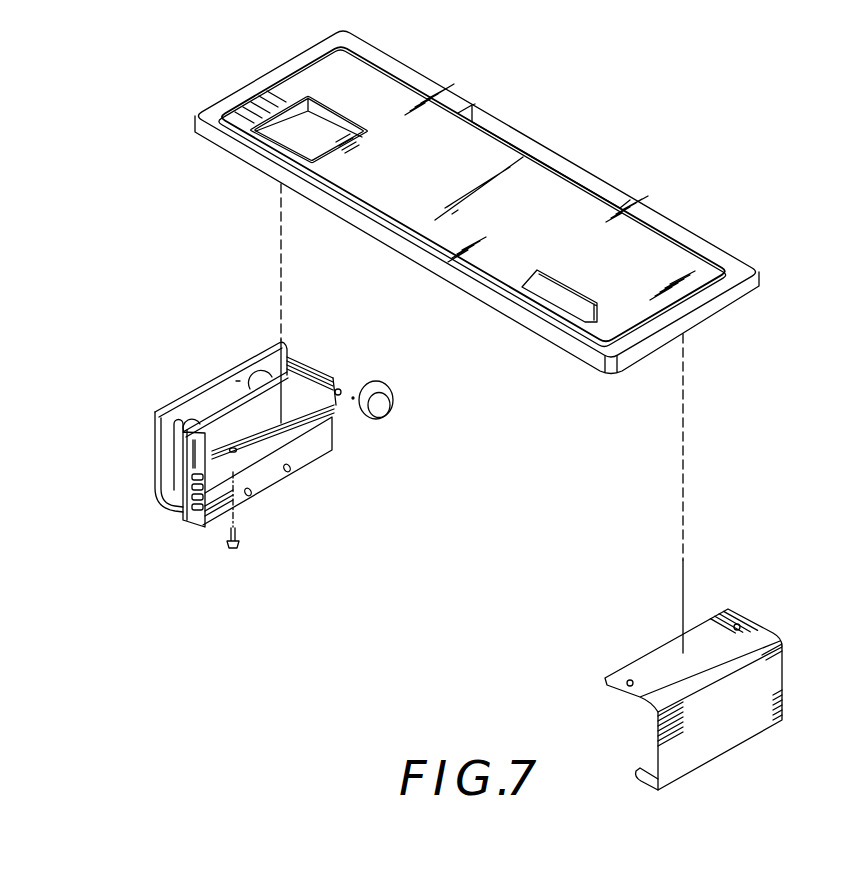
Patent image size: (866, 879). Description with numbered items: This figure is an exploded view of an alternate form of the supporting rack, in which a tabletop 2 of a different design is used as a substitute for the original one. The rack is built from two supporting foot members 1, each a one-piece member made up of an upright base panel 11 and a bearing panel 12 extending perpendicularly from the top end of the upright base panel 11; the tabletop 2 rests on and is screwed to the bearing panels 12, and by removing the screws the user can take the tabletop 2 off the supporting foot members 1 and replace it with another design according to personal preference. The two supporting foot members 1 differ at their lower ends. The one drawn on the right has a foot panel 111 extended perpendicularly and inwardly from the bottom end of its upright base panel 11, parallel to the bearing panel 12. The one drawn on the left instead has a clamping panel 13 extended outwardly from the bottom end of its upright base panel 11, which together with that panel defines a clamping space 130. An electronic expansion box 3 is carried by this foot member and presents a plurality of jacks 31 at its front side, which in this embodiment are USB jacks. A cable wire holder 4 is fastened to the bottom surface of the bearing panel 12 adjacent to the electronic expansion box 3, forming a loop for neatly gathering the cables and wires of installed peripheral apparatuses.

The supporting foot member 1 is at (709, 673).
The upright base panel 11 is at (773, 687).
The foot panel 111 is at (648, 773).
The bearing panel 12 is at (708, 632).
The tabletop 2 is at (663, 223).
The electronic expansion box 3 is at (268, 485).
The jacks 31 is at (200, 522).
The cable wire holder 4 is at (373, 382).
The clamping panel 13 is at (183, 400).
The clamping space 130 is at (238, 372).